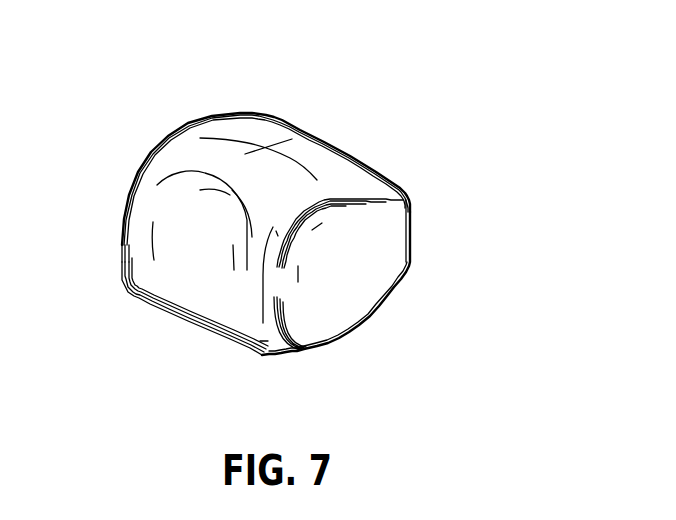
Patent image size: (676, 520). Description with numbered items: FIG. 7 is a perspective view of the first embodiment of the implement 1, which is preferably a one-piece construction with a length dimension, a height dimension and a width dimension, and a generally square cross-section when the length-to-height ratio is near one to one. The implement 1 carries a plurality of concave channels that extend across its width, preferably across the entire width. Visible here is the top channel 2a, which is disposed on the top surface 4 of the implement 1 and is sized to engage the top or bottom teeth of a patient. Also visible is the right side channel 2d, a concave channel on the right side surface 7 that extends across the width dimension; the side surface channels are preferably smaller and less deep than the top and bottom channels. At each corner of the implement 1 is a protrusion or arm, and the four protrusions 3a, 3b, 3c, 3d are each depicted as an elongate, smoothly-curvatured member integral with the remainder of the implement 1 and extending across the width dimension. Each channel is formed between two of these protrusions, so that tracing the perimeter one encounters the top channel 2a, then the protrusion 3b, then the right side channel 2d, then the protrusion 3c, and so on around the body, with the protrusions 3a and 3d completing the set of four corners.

The implement 1 is at (464, 118).
The top channel 2a is at (200, 268).
The right side channel 2d is at (363, 283).
The protrusion 3a is at (121, 245).
The protrusion 3b is at (266, 342).
The protrusion 3c is at (410, 233).
The protrusion 3d is at (248, 112).
The top surface 4 is at (201, 328).
The right side surface 7 is at (344, 272).